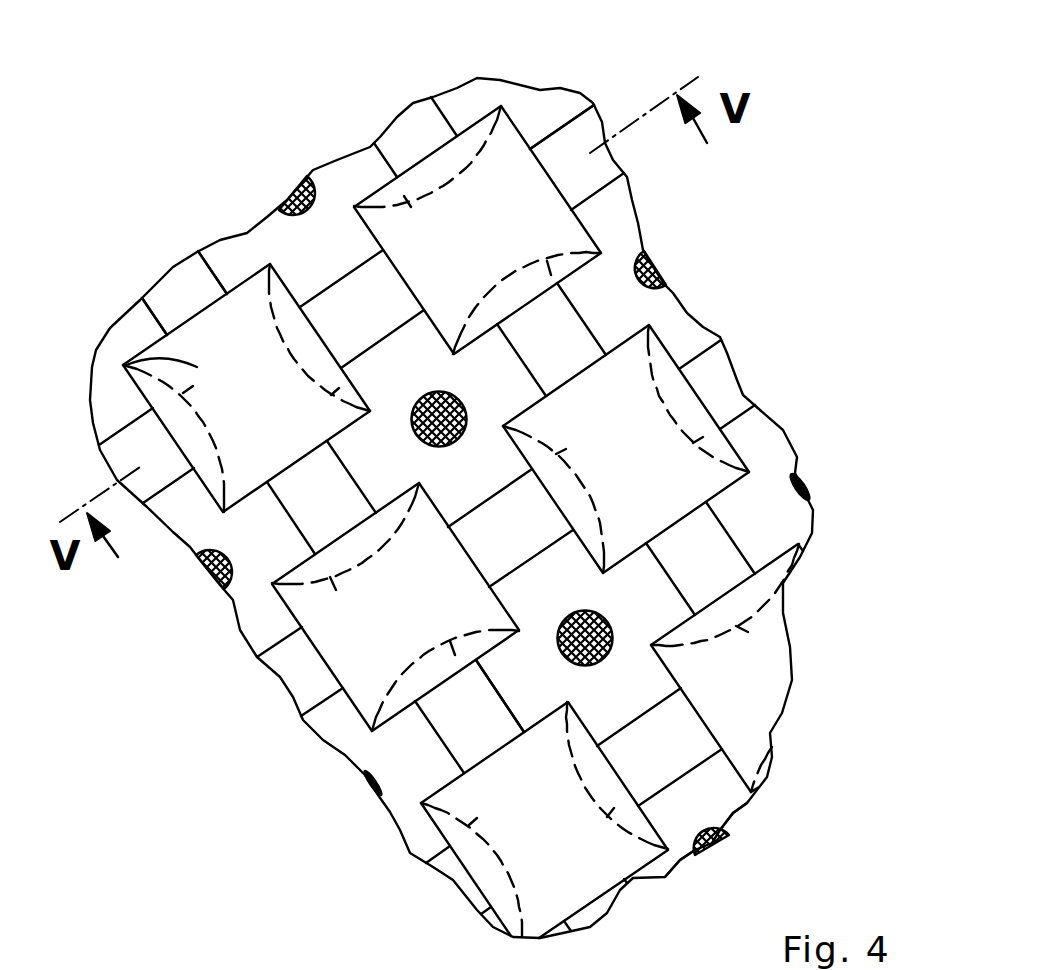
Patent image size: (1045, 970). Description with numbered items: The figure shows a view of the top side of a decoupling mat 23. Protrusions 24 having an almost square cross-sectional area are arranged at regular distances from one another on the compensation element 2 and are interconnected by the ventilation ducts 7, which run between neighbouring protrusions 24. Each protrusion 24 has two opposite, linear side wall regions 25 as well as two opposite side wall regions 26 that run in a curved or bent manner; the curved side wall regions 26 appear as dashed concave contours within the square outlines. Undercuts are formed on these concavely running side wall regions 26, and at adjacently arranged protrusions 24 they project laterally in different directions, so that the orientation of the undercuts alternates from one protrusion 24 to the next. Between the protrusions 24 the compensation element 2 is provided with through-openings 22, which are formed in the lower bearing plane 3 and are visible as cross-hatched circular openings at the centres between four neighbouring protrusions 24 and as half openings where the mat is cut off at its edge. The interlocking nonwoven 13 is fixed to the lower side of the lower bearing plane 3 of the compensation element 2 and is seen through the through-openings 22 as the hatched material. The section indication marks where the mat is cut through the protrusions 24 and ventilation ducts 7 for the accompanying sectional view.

The compensation element 2 is at (680, 825).
The lower bearing plane 3 is at (707, 798).
The ventilation duct 7 is at (720, 385).
The interlocking nonwoven 13 is at (285, 205).
The through-opening 22 is at (307, 190).
The decoupling mat 23 is at (780, 298).
The protrusion 24 is at (200, 362).
The linear side wall region 25 is at (522, 118).
The curved side wall region 26 is at (478, 128).